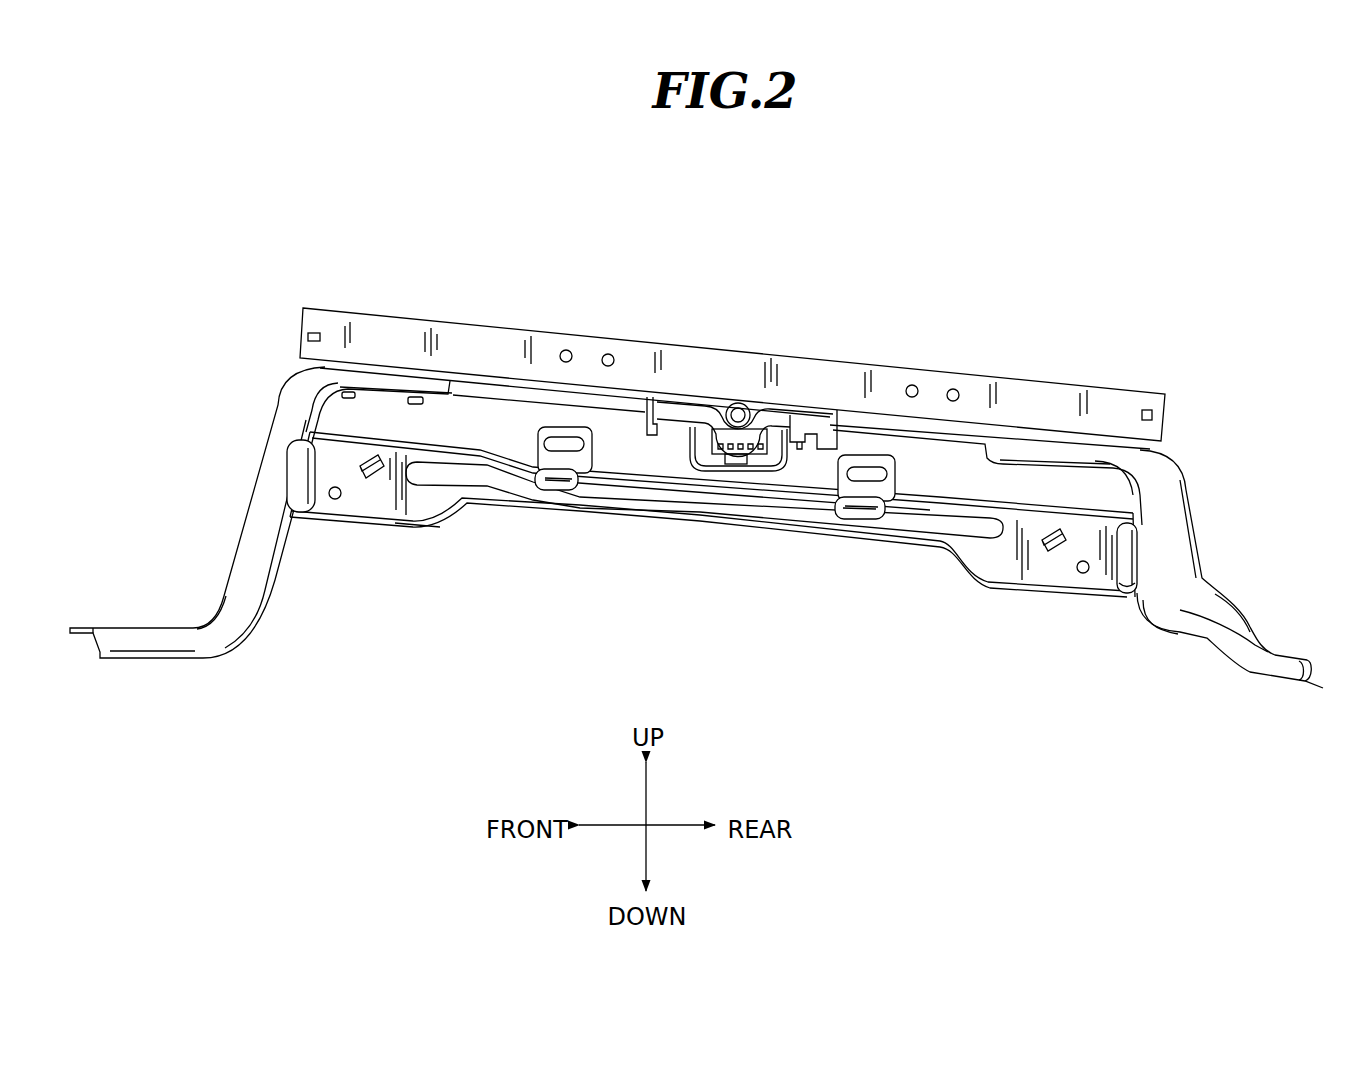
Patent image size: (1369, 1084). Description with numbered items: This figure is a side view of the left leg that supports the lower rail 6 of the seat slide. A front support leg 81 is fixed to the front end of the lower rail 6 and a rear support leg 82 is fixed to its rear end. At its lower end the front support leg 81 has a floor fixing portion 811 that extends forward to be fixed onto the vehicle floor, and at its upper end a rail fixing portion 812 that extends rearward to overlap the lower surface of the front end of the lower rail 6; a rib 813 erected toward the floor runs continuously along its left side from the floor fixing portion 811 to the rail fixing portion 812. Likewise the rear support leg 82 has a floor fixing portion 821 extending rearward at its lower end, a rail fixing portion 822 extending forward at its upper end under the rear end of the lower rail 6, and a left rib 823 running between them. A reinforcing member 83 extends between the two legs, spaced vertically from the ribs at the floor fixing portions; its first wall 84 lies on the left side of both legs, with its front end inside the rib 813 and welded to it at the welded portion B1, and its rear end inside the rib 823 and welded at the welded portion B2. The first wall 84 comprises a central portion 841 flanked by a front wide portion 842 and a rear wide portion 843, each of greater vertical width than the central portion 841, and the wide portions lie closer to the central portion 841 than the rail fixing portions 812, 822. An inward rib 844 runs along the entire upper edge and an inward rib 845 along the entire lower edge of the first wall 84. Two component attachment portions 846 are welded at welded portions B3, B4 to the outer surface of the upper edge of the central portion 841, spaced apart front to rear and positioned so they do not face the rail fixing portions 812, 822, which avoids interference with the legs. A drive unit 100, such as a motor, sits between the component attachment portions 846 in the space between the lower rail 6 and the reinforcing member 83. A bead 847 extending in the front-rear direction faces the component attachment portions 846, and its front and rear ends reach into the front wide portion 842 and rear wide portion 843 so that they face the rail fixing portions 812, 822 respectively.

The lower rail 6 is at (1112, 402).
The front support leg 81 is at (450, 496).
The floor fixing portion 811 is at (145, 645).
The rail fixing portion 812 is at (380, 378).
The rib 813 is at (253, 633).
The rear support leg 82 is at (1076, 512).
The floor fixing portion 821 is at (1265, 653).
The rail fixing portion 822 is at (1042, 447).
The rib 823 is at (1157, 610).
The reinforcing member 83 is at (403, 545).
The first wall 84 is at (712, 476).
The central portion 841 is at (702, 530).
The front wide portion 842 is at (355, 532).
The rear wide portion 843 is at (1037, 597).
The rib 844 is at (470, 450).
The rib 845 is at (443, 523).
The component attachment portion 846 is at (547, 433).
The bead 847 is at (642, 500).
The drive unit 100 is at (715, 410).
The welded portion B1 is at (297, 477).
The welded portion B2 is at (1132, 563).
The welded portion B3 is at (557, 483).
The welded portion B4 is at (863, 515).